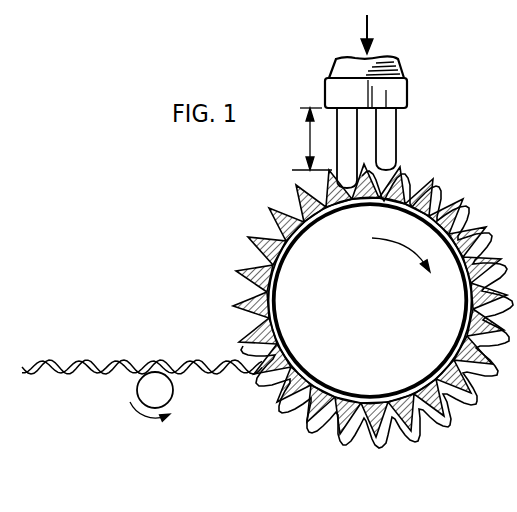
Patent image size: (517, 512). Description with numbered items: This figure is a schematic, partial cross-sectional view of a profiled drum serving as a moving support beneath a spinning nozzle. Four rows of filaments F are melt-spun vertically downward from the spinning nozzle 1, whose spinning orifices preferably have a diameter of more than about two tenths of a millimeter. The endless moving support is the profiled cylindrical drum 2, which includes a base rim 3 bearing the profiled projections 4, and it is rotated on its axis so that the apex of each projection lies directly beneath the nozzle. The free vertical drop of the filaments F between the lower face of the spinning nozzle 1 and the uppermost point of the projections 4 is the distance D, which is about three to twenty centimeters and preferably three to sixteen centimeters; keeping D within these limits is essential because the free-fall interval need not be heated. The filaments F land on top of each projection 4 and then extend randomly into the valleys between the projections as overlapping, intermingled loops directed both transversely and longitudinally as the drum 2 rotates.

The spinning nozzle 1 is at (400, 88).
The filaments F is at (378, 144).
The distance D is at (304, 139).
The profiled cylindrical drum 2 is at (339, 306).
The base rim 3 is at (276, 267).
The profiled projections 4 is at (297, 186).